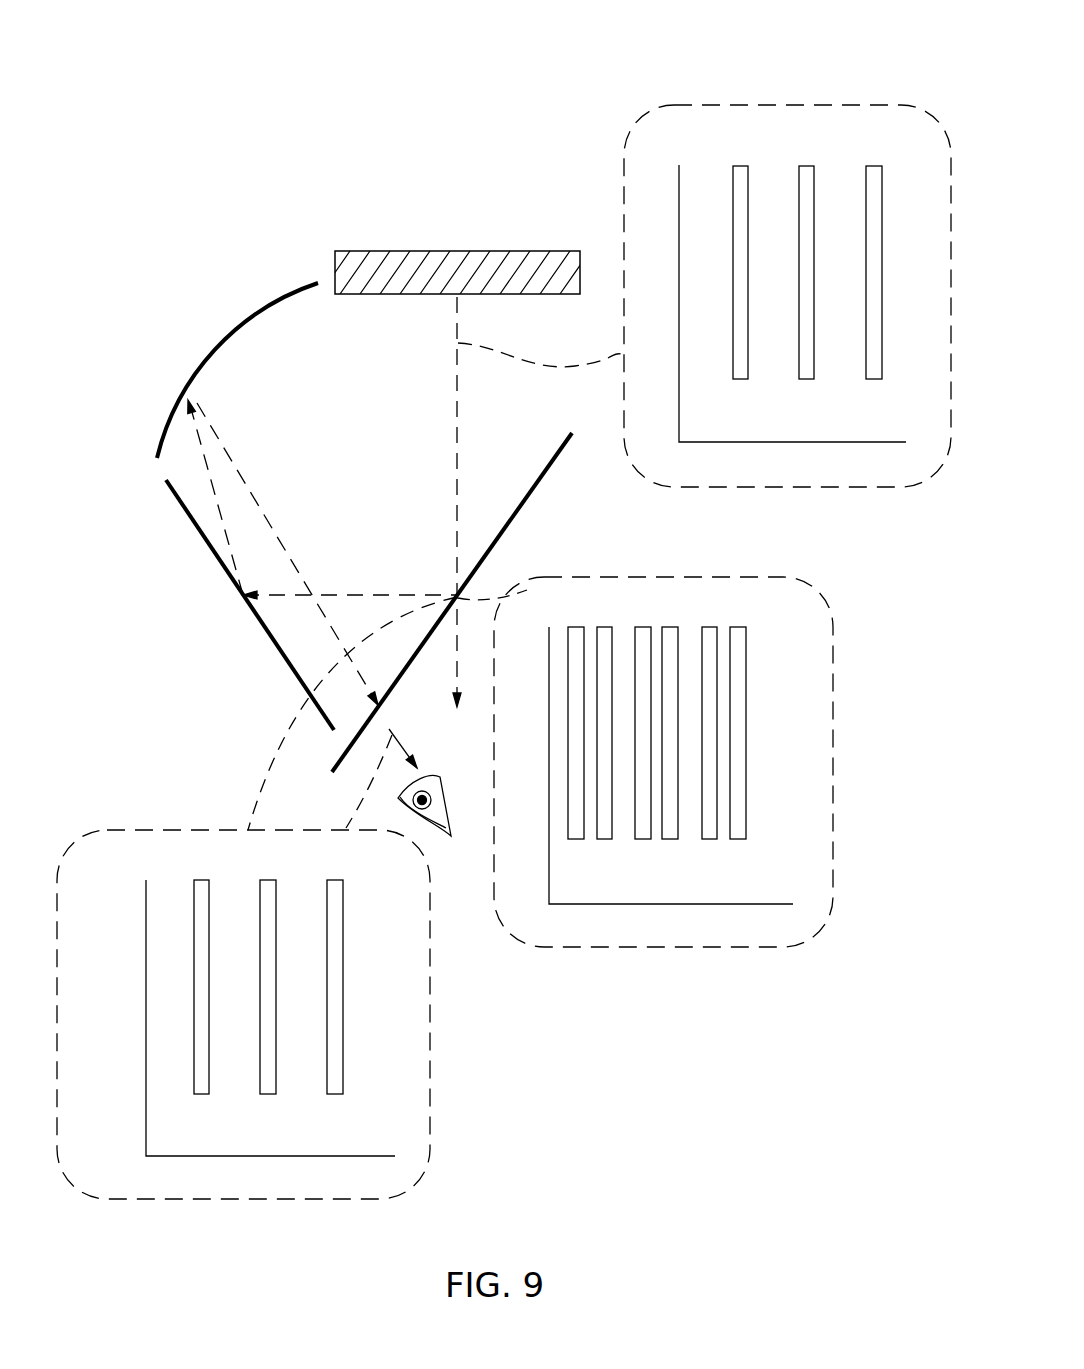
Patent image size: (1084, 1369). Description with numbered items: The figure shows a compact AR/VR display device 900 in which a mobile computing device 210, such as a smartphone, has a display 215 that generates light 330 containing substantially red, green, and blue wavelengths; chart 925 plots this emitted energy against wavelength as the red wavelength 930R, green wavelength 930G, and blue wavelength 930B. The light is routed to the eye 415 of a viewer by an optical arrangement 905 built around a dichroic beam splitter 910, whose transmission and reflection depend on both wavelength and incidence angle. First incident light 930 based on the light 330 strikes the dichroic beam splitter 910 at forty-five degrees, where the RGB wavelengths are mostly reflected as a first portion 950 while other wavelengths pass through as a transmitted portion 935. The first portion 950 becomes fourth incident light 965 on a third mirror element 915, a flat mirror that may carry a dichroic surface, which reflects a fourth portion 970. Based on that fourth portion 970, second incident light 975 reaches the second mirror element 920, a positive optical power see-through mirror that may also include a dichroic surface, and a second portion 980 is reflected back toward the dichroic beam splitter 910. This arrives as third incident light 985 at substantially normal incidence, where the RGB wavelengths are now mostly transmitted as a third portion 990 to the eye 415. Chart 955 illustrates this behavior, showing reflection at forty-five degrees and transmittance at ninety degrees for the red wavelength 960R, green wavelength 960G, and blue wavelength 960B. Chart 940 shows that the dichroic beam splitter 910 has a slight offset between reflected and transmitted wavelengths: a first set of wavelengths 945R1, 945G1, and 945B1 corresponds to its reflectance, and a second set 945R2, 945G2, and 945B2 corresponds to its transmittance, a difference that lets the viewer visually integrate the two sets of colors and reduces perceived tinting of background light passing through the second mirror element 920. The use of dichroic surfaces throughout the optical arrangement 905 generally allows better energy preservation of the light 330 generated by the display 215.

The compact AR/VR display device 900 is at (180, 215).
The optical arrangement 905 is at (190, 655).
The mobile computing device 210 is at (405, 251).
The display 215 is at (437, 295).
The light 330 is at (458, 297).
The first incident light 930 is at (455, 592).
The dichroic beam splitter 910 is at (550, 465).
The third mirror element 915 is at (165, 482).
The second mirror element 920 is at (160, 444).
The first portion 950 is at (455, 597).
The fourth portion 970 is at (243, 593).
The fourth incident light 965 is at (252, 606).
The second incident light 975 is at (186, 408).
The second portion 980 is at (197, 410).
The third incident light 985 is at (372, 695).
The third portion 990 is at (380, 708).
The transmitted portion 935 is at (497, 592).
The eye 415 is at (440, 836).
The chart 925 is at (828, 105).
The blue wavelength 930B is at (740, 379).
The green wavelength 930G is at (806, 166).
The red wavelength 930R is at (874, 379).
The chart 940 is at (815, 607).
The blue wavelength of first set 945B1 is at (576, 839).
The blue wavelength of second set 945B2 is at (604, 839).
The green wavelength of first set 945G1 is at (643, 627).
The green wavelength of second set 945G2 is at (670, 627).
The red wavelength of first set 945R1 is at (710, 839).
The red wavelength of second set 945R2 is at (738, 839).
The chart 955 is at (175, 830).
The blue wavelength 960B is at (202, 1094).
The green wavelength 960G is at (266, 880).
The red wavelength 960R is at (335, 1094).